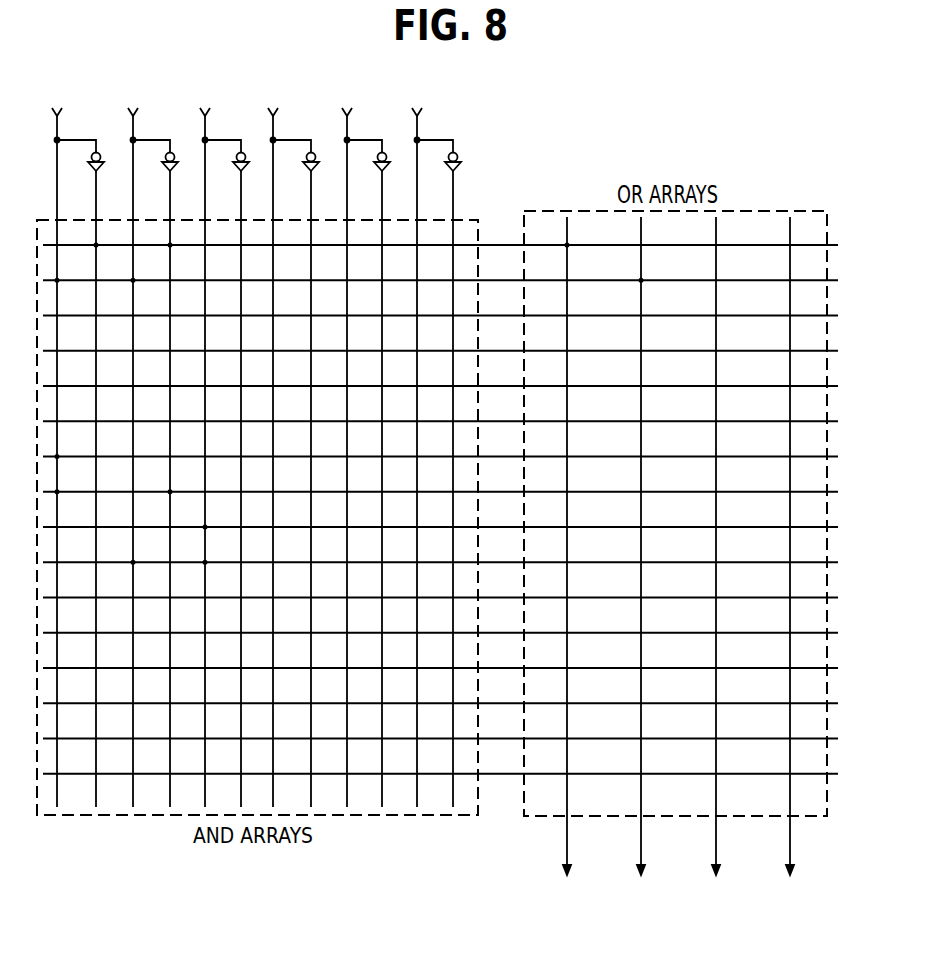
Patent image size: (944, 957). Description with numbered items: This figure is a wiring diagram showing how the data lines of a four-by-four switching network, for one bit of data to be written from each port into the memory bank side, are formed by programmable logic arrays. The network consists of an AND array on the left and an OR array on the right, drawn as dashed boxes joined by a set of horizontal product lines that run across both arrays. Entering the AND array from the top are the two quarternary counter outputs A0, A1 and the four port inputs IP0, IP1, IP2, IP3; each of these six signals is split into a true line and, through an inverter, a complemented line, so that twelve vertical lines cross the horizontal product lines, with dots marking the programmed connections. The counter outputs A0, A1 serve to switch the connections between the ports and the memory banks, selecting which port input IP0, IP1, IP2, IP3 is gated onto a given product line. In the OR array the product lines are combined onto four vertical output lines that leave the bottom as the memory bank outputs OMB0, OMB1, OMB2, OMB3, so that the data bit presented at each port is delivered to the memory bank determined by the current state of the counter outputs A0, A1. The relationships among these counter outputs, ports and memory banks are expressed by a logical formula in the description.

The quarternary counter output A0 is at (73, 441).
The quarternary counter output A1 is at (150, 441).
The port input IP0 is at (221, 441).
The port input IP1 is at (290, 441).
The port input IP2 is at (361, 441).
The port input IP3 is at (432, 441).
The memory bank output OMB0 is at (565, 565).
The memory bank output OMB1 is at (643, 565).
The memory bank output OMB2 is at (718, 565).
The memory bank output OMB3 is at (793, 565).